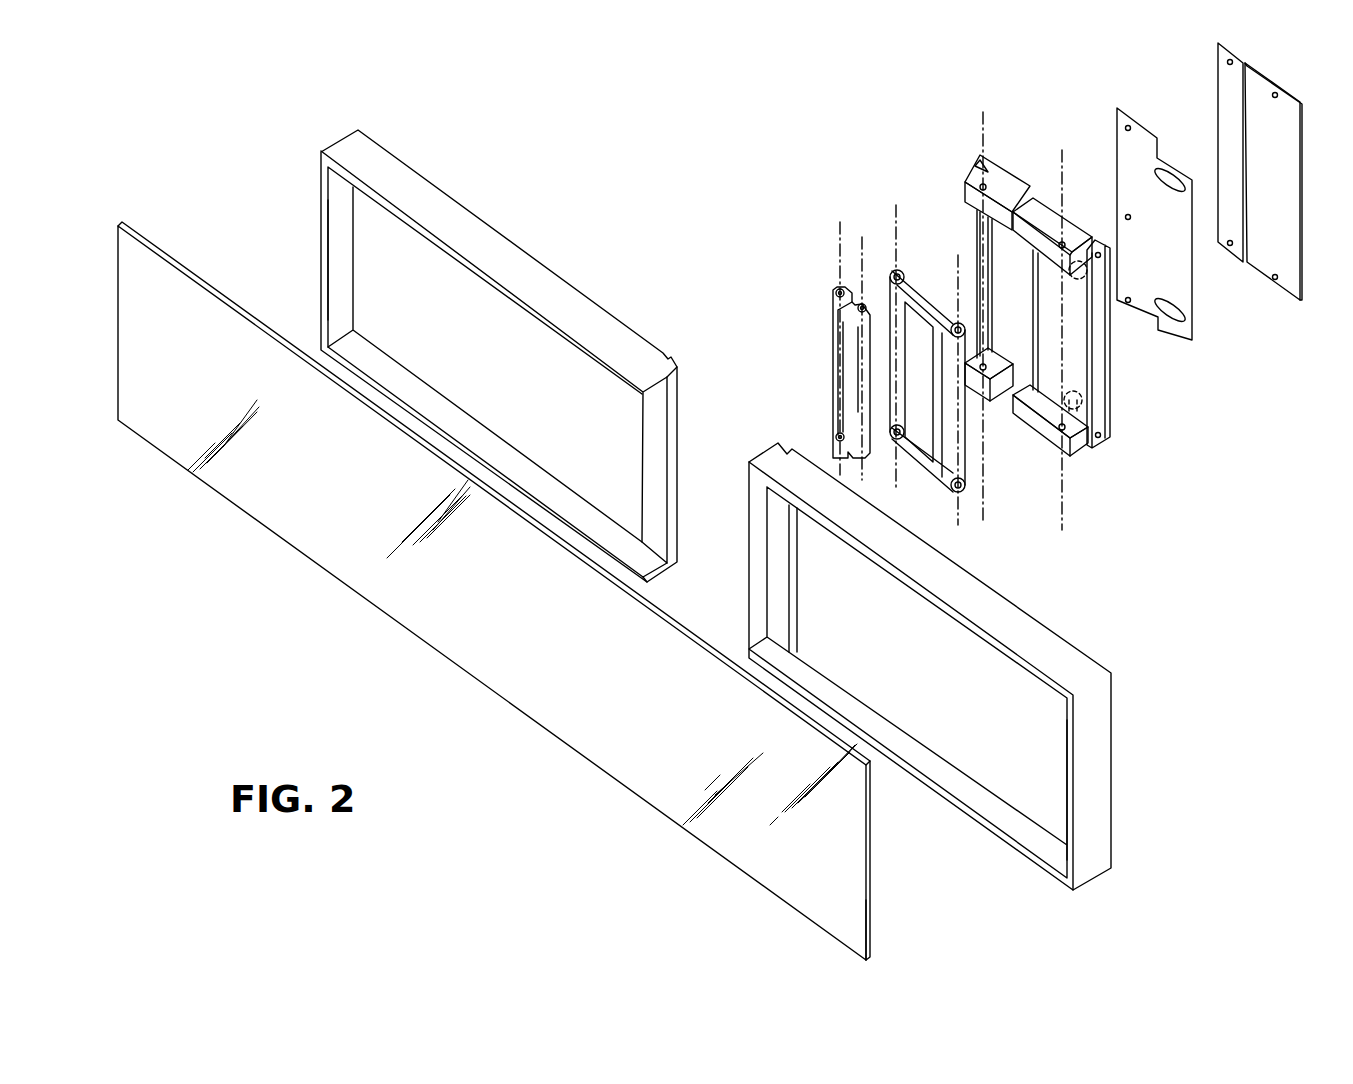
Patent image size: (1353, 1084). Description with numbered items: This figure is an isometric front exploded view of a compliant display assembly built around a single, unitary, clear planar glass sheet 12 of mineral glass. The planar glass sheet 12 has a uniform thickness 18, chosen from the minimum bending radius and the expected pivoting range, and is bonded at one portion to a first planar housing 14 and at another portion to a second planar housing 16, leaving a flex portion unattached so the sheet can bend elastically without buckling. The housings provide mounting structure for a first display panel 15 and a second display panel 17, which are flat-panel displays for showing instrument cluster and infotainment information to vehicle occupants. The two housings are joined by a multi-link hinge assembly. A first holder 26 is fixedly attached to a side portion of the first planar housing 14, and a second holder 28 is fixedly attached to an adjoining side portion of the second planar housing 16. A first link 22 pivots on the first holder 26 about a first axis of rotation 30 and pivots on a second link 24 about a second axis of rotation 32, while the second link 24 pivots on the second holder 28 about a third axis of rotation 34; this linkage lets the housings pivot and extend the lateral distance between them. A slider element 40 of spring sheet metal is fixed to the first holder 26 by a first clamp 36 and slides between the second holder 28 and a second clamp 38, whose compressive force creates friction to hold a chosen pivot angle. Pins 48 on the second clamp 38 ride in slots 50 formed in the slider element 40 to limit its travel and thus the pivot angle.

The planar glass sheet 12 is at (170, 289).
The first planar housing 14 is at (425, 190).
The first display panel 15 is at (335, 243).
The second planar housing 16 is at (1045, 640).
The second display panel 17 is at (1048, 740).
The uniform thickness 18 is at (869, 907).
The first link 22 is at (833, 317).
The second link 24 is at (966, 480).
The first holder 26 is at (972, 187).
The second holder 28 is at (1103, 345).
The first axis of rotation 30 is at (840, 247).
The second axis of rotation 32 is at (895, 232).
The third axis of rotation 34 is at (953, 280).
The first clamp 36 is at (1225, 98).
The second clamp 38 is at (1288, 157).
The slider element 40 is at (1180, 252).
The pins 48 is at (1078, 260).
The slots 50 is at (1167, 175).